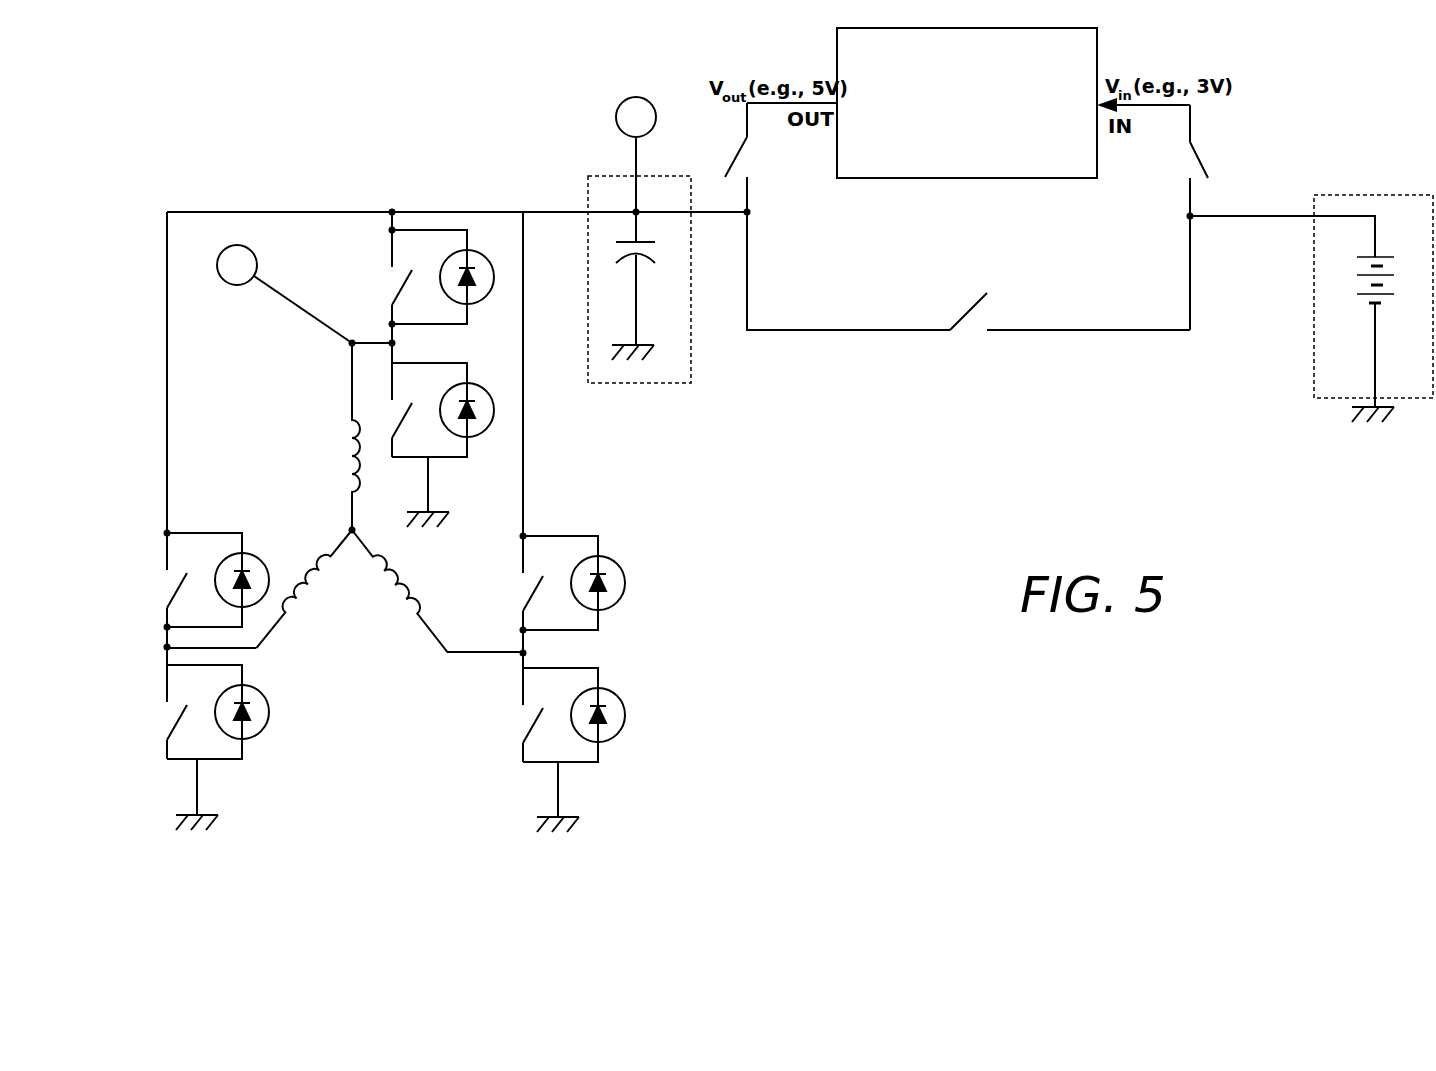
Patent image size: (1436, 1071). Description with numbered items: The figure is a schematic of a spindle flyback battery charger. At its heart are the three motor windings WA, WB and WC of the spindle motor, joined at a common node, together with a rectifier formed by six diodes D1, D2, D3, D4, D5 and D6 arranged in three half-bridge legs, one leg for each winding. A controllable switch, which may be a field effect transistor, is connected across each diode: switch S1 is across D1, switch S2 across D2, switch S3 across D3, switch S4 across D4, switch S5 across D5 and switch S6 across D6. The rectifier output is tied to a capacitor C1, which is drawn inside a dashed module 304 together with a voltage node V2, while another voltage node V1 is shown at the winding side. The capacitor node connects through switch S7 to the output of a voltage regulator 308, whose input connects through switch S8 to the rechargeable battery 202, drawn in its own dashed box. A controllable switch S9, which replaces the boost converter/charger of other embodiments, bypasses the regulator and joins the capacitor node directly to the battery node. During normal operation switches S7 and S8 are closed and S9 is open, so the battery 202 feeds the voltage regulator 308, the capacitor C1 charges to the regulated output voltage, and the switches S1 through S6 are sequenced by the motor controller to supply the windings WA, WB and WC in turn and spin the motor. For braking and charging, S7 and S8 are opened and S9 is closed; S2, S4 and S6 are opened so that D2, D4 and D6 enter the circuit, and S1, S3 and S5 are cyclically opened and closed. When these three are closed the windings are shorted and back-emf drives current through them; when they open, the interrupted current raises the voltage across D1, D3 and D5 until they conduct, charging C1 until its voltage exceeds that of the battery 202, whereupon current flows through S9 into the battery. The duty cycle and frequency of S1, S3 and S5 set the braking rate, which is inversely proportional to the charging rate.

The controllable switch S1 is at (389, 277).
The controllable switch S2 is at (389, 410).
The controllable switch S3 is at (163, 580).
The controllable switch S4 is at (163, 712).
The controllable switch S5 is at (518, 583).
The controllable switch S6 is at (518, 715).
The switch S7 is at (781, 157).
The switch S8 is at (1182, 217).
The controllable switch S9 is at (968, 271).
The diode D1 is at (455, 277).
The diode D2 is at (458, 410).
The diode D3 is at (227, 580).
The diode D4 is at (227, 712).
The diode D5 is at (586, 582).
The diode D6 is at (586, 715).
The motor winding WA is at (339, 436).
The motor winding WB is at (259, 586).
The motor winding WC is at (437, 588).
The voltage V1 node V1 is at (284, 294).
The voltage V2 node V2 is at (636, 154).
The capacitor C1 is at (652, 286).
The energy storage module 304 is at (615, 176).
The voltage regulator 308 is at (885, 178).
The rechargeable battery 202 is at (1373, 195).